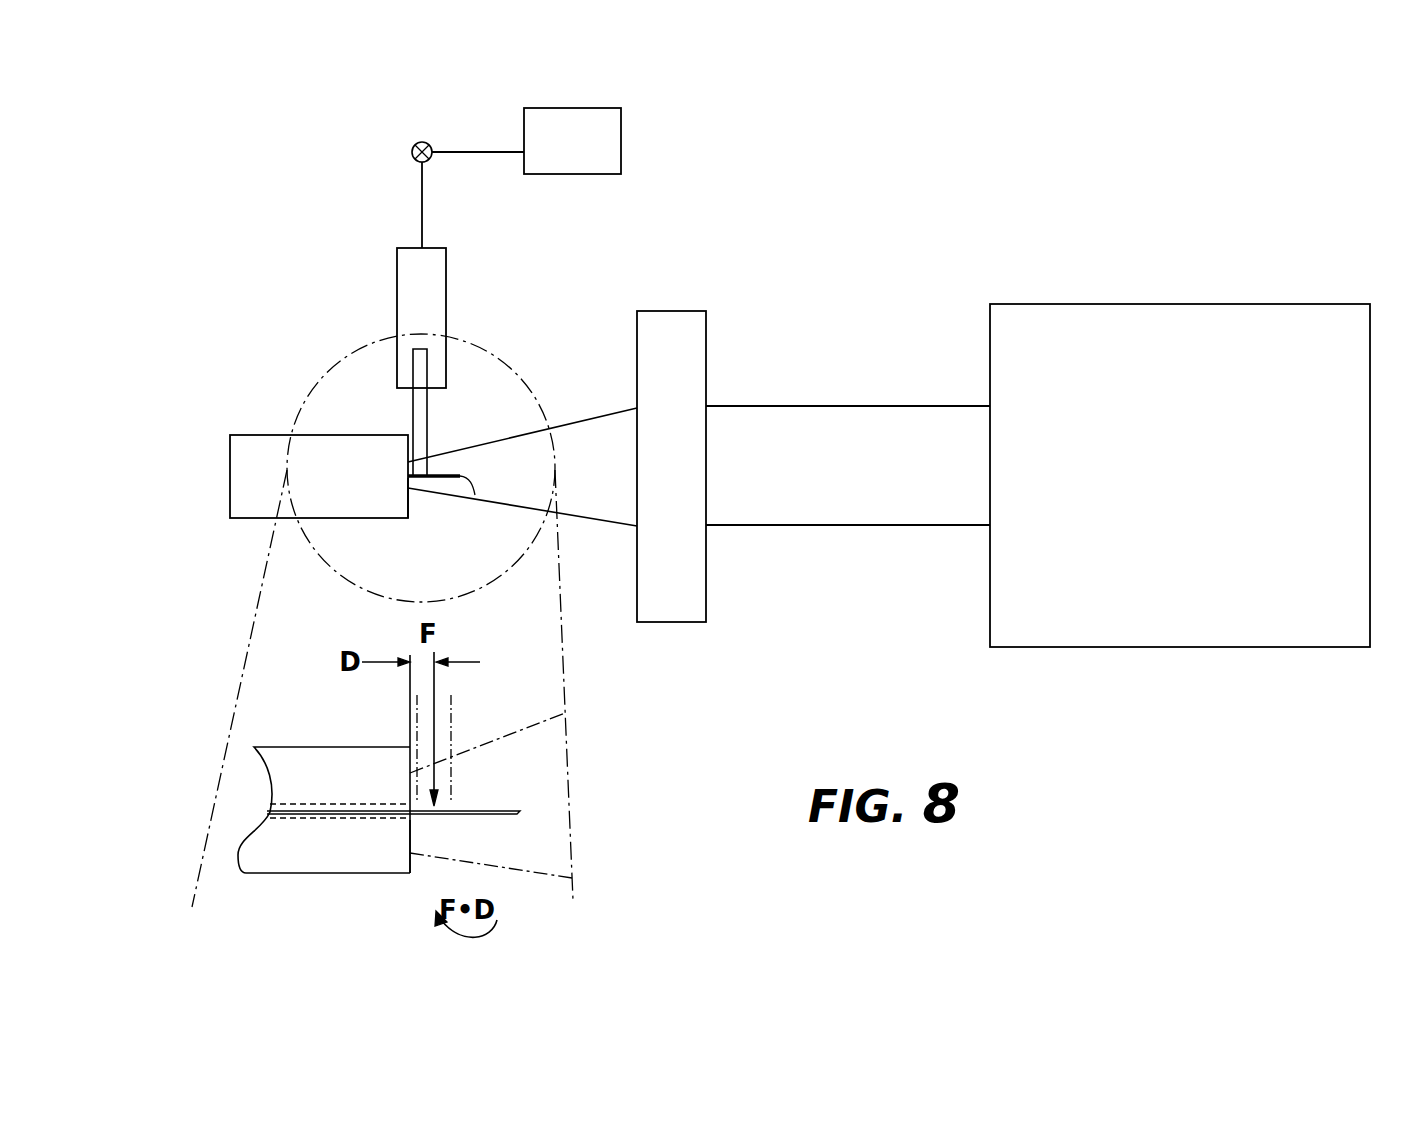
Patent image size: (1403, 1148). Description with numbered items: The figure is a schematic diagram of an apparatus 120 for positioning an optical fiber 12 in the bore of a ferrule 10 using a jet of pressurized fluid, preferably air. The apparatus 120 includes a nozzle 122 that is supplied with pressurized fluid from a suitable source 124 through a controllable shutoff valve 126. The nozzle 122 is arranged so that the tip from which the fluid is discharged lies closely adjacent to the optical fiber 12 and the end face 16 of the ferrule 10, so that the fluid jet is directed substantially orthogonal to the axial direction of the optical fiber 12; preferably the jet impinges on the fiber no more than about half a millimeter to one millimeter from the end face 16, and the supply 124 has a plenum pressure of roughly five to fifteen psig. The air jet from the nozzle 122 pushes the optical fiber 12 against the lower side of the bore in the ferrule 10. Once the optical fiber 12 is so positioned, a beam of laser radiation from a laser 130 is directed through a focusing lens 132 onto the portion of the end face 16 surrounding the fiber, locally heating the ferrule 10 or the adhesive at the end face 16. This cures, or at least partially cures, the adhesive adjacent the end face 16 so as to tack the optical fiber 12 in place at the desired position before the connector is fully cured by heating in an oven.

The ferrule 10 is at (290, 507).
The optical fiber 12 is at (475, 495).
The end face 16 is at (408, 503).
The apparatus 120 is at (877, 203).
The nozzle 122 is at (428, 417).
The source of pressurized fluid 124 is at (621, 140).
The controllable shutoff valve 126 is at (412, 152).
The laser 130 is at (1180, 647).
The focusing lens 132 is at (676, 622).